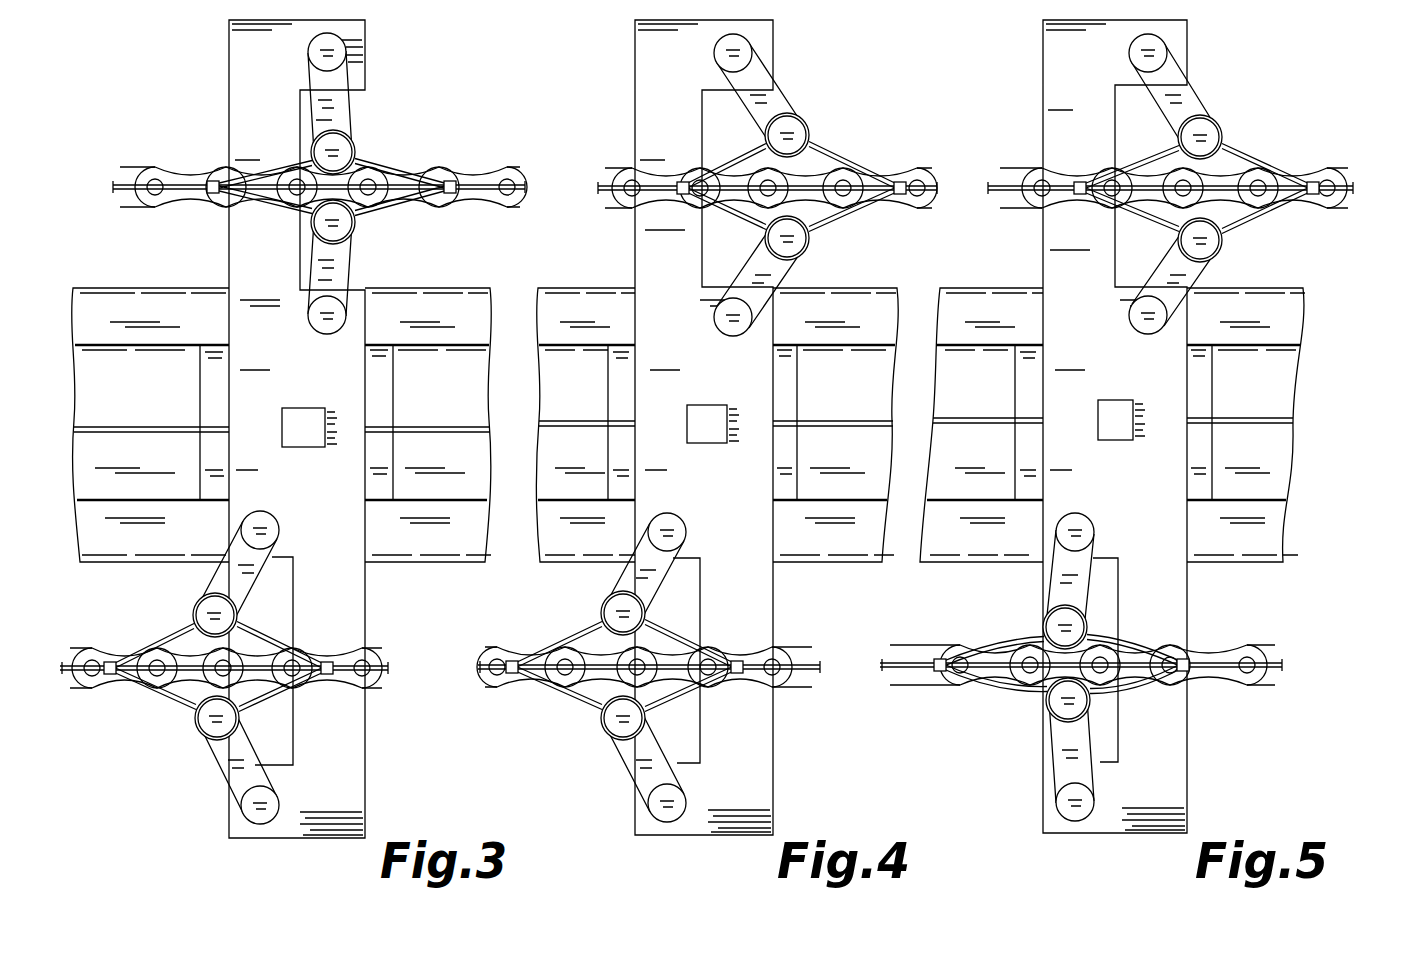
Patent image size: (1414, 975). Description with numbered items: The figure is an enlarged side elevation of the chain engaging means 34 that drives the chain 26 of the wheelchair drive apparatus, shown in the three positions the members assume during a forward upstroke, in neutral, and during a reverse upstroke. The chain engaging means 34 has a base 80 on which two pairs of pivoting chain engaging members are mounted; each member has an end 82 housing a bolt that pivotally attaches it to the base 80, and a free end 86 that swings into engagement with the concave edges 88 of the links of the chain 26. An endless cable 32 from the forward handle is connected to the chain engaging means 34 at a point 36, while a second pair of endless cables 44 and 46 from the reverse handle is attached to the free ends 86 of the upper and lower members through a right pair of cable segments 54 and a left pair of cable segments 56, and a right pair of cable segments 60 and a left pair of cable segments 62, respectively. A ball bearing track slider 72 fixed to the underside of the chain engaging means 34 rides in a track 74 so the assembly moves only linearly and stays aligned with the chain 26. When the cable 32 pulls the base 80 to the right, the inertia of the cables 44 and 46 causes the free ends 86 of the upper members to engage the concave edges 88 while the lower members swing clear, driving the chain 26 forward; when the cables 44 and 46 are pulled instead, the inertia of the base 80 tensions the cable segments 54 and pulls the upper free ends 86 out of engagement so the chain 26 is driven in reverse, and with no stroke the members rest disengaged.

In FIG. 3, the chain 26 is at (473, 170).
In FIG. 4, the chain 26 is at (928, 172).
In FIG. 5, the chain 26 is at (1338, 170).
In FIG. 3, the endless cable 32 is at (422, 427).
In FIG. 4, the endless cable 32 is at (833, 427).
In FIG. 5, the endless cable 32 is at (1275, 418).
In FIG. 3, the chain engaging means 34 is at (372, 27).
In FIG. 4, the chain engaging means 34 is at (785, 34).
In FIG. 5, the chain engaging means 34 is at (1195, 42).
In FIG. 3, the point 36 is at (295, 408).
In FIG. 4, the point 36 is at (703, 405).
In FIG. 5, the point 36 is at (1118, 400).
In FIG. 3, the endless cable 44 is at (137, 177).
In FIG. 4, the endless cable 44 is at (815, 180).
In FIG. 5, the endless cable 44 is at (1223, 180).
In FIG. 3, the endless cable 46 is at (277, 657).
In FIG. 4, the endless cable 46 is at (687, 655).
In FIG. 5, the endless cable 46 is at (995, 655).
In FIG. 3, the right pair of cable segments 54 is at (407, 162).
In FIG. 4, the right pair of cable segments 54 is at (860, 160).
In FIG. 5, the right pair of cable segments 54 is at (1265, 160).
In FIG. 3, the left pair of cable segments 56 is at (267, 163).
In FIG. 4, the left pair of cable segments 56 is at (728, 167).
In FIG. 5, the left pair of cable segments 56 is at (1145, 160).
In FIG. 3, the right pair of cable segments 60 is at (257, 632).
In FIG. 4, the right pair of cable segments 60 is at (665, 632).
In FIG. 5, the right pair of cable segments 60 is at (1130, 648).
In FIG. 3, the left pair of cable segments 62 is at (172, 632).
In FIG. 4, the left pair of cable segments 62 is at (578, 635).
In FIG. 5, the left pair of cable segments 62 is at (1005, 645).
In FIG. 3, the track slider 72 is at (205, 392).
In FIG. 4, the track slider 72 is at (795, 395).
In FIG. 5, the track slider 72 is at (1205, 453).
In FIG. 3, the track 74 is at (107, 287).
In FIG. 4, the track 74 is at (833, 565).
In FIG. 5, the track 74 is at (1288, 322).
In FIG. 3, the base 80 is at (362, 53).
In FIG. 3, the end 82 is at (347, 57).
In FIG. 3, the free end 86 is at (320, 145).
In FIG. 3, the concave edges 88 is at (192, 163).